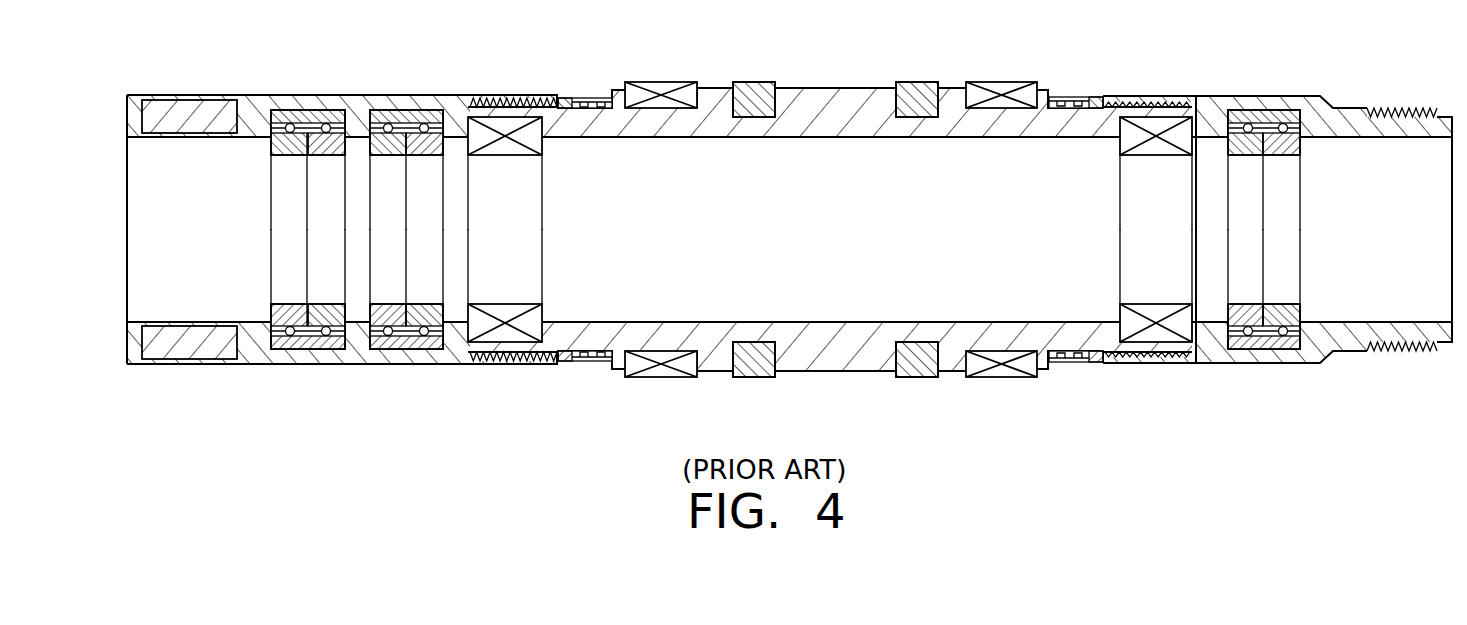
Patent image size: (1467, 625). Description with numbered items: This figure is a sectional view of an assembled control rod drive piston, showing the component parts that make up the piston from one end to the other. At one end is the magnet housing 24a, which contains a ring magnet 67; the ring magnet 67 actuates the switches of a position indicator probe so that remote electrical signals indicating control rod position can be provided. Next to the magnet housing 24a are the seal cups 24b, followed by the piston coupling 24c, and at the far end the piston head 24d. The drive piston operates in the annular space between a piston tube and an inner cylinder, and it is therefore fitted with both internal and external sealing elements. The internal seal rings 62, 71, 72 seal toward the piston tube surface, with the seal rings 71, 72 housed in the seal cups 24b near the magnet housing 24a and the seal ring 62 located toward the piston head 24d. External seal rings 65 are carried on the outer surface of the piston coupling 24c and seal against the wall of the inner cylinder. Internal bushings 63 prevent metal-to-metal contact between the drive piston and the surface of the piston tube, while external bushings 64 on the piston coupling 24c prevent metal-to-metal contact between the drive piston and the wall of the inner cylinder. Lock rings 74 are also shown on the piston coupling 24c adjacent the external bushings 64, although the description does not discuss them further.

The magnet housing 24a is at (193, 95).
The seal cups 24b is at (363, 112).
The piston coupling 24c is at (832, 93).
The piston head 24d is at (1310, 96).
The internal seal ring 62 is at (1252, 150).
The internal bushing 63 is at (479, 302).
The external bushing 64 is at (666, 88).
The external seal ring 65 is at (752, 84).
The ring magnet 67 is at (190, 112).
The internal seal ring 71 is at (308, 153).
The internal seal ring 72 is at (397, 156).
The lock ring 74 is at (594, 100).